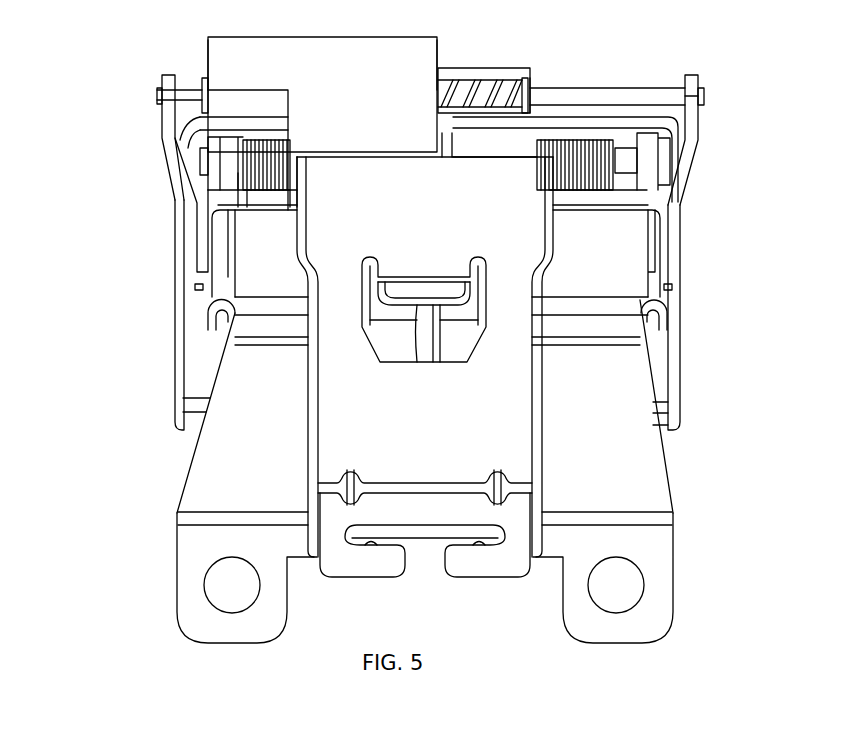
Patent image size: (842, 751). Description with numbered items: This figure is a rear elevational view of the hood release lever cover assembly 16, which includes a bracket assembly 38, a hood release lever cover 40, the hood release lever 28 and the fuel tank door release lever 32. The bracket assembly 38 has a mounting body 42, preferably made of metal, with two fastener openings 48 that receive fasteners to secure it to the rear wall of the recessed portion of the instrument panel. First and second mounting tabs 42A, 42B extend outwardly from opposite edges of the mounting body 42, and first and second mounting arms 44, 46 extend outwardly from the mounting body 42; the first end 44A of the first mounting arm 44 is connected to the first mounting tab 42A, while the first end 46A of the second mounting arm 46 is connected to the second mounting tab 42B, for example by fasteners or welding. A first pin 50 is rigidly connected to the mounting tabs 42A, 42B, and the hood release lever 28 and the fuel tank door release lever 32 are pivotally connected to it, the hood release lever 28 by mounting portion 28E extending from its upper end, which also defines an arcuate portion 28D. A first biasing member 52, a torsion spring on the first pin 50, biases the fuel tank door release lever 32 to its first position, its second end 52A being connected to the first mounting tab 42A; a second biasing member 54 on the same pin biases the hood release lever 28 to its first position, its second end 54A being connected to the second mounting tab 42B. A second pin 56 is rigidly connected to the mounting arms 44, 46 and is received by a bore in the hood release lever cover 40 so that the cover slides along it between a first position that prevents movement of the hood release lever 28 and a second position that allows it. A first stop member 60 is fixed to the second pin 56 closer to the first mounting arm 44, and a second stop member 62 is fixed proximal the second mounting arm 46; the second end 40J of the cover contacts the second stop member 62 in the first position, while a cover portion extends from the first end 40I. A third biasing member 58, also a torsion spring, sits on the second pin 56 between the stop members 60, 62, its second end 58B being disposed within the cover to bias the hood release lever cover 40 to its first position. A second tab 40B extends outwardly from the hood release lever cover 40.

The hood release lever cover assembly 16 is at (112, 209).
The hood release lever 28 is at (202, 370).
The arcuate portion 28D is at (232, 123).
The mounting portion 28E is at (228, 157).
The fuel tank door release lever 32 is at (658, 375).
The bracket assembly 38 is at (690, 548).
The hood release lever cover 40 is at (336, 37).
The second tab 40B is at (377, 117).
The first end 40I is at (208, 55).
The second end 40J is at (440, 53).
The mounting body 42 is at (660, 470).
The first mounting tab 42A is at (667, 302).
The second mounting tab 42B is at (207, 303).
The first mounting arm 44 is at (700, 140).
The first end 44A is at (681, 252).
The second mounting arm 46 is at (162, 128).
The first end 46A is at (197, 248).
The fastener opening 48 is at (210, 607).
The first pin 50 is at (625, 143).
The first biasing member 52 is at (583, 140).
The second end 52A is at (667, 288).
The second biasing member 54 is at (263, 140).
The second end 54A is at (207, 287).
The second pin 56 is at (662, 88).
The third biasing member 58 is at (477, 100).
The second end 58B is at (520, 78).
The first stop member 60 is at (532, 80).
The second stop member 62 is at (200, 78).